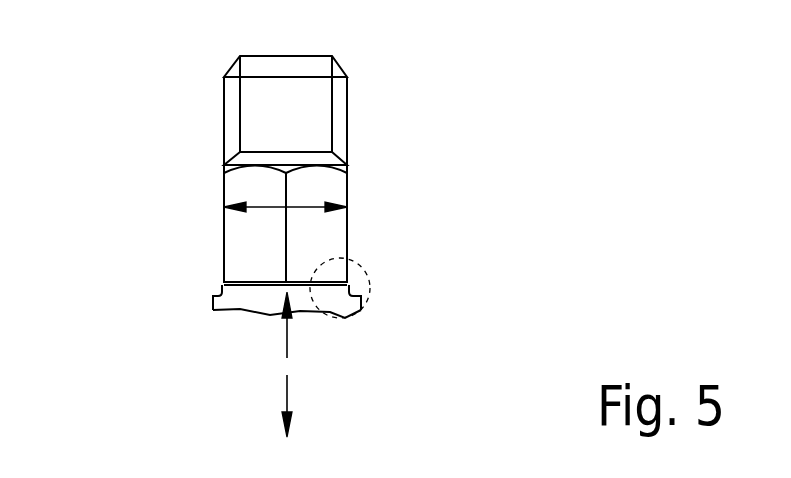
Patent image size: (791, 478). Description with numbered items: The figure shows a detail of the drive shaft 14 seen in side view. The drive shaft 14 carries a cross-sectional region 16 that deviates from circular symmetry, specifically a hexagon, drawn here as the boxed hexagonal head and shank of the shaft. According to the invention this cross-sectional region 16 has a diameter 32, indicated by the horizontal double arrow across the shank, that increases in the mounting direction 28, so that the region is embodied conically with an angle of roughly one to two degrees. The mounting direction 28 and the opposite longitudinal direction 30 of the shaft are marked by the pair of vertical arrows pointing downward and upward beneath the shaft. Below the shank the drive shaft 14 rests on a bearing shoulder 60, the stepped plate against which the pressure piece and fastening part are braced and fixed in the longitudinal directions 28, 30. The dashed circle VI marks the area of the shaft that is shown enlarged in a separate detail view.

The drive shaft 14 is at (358, 80).
The cross-sectional region deviating from circular symmetry 16 is at (327, 230).
The diameter 32 is at (268, 207).
The bearing shoulder 60 is at (213, 293).
The detail view indication VI is at (370, 287).
The longitudinal direction 30 is at (287, 328).
The mounting direction 28 is at (287, 398).